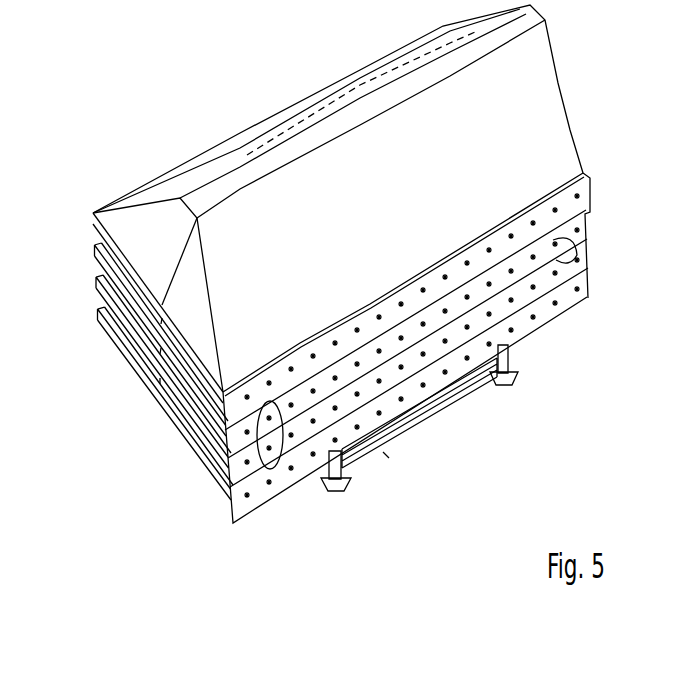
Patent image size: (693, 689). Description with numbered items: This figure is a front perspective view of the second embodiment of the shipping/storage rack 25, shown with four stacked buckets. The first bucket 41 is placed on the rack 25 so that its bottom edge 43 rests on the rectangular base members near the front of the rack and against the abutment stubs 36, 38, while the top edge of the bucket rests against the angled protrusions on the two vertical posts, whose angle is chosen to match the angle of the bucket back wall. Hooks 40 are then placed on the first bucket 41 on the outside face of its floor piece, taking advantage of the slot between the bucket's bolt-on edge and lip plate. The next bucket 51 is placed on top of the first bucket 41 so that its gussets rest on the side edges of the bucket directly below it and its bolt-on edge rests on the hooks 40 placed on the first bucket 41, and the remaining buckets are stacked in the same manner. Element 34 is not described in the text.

The rack 25 is at (362, 497).
The rail 34 is at (443, 408).
The abutment stub 36 is at (322, 480).
The abutment stub 38 is at (513, 343).
The hooks 40 is at (560, 262).
The first bucket 41 is at (200, 467).
The bottom edge 43 is at (385, 455).
The next bucket 51 is at (203, 447).